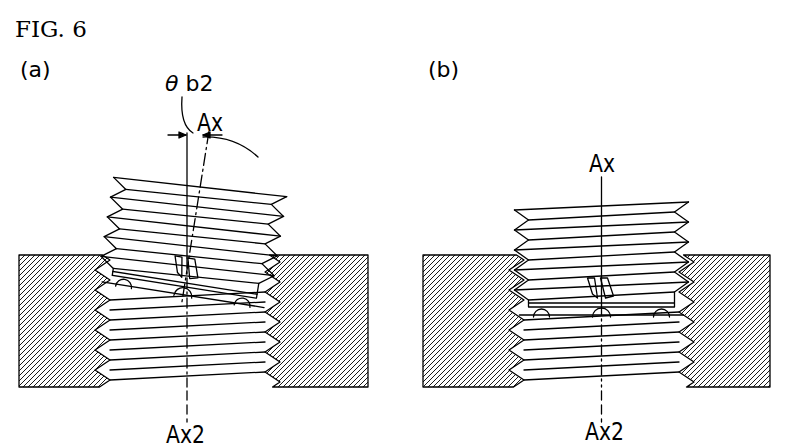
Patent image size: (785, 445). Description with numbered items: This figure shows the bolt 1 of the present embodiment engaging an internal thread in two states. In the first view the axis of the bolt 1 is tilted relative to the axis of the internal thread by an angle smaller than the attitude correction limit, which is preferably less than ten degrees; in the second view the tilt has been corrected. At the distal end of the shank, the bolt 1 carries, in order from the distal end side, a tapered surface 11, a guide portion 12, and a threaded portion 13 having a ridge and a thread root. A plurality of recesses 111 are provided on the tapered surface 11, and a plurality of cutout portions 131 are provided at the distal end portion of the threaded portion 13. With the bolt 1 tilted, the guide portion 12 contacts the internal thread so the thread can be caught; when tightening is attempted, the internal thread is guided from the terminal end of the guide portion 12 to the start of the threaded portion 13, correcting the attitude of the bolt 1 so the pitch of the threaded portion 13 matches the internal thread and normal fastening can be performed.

The bolt 1 is at (107, 162).
The tapered surface 11 is at (368, 301).
The recess 111 is at (301, 301).
The guide portion 12 is at (454, 361).
The threaded portion 13 is at (437, 236).
The cutout portion 131 is at (473, 258).